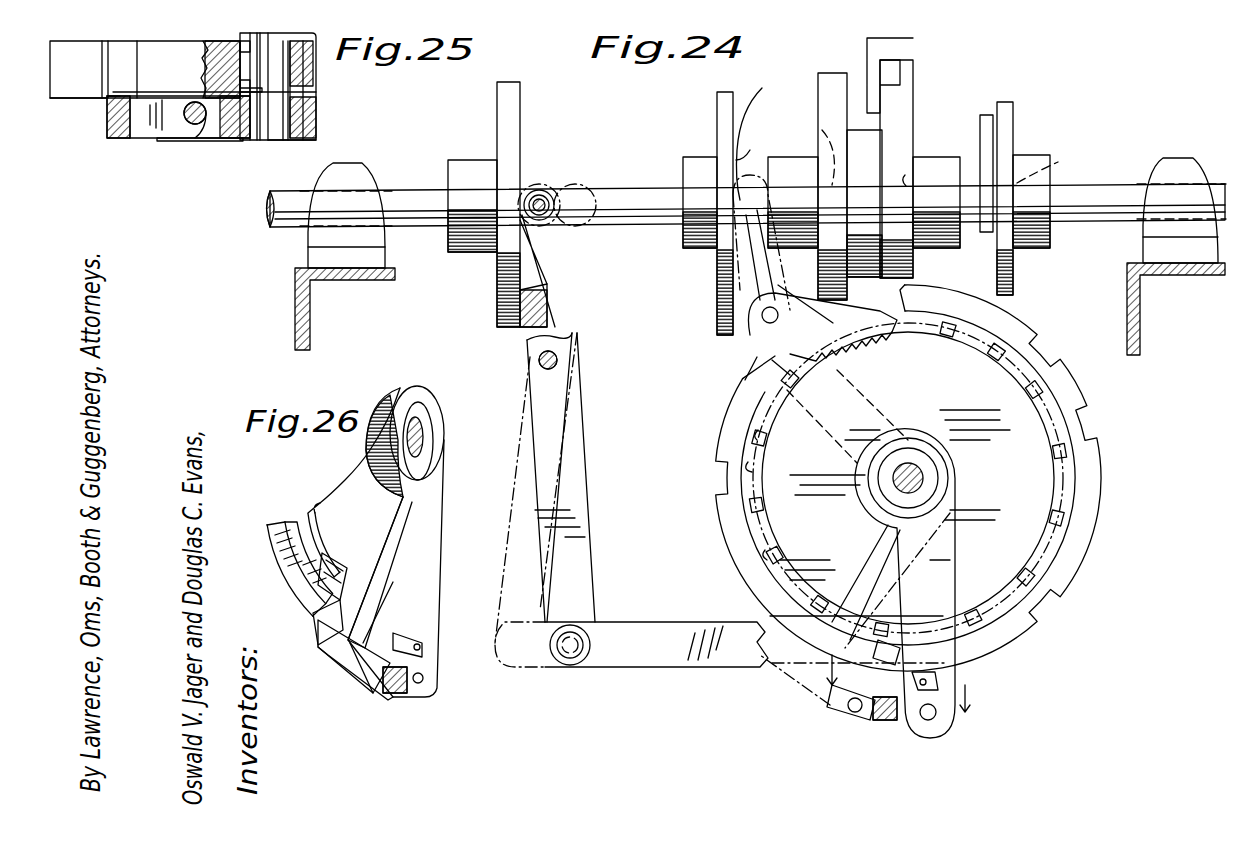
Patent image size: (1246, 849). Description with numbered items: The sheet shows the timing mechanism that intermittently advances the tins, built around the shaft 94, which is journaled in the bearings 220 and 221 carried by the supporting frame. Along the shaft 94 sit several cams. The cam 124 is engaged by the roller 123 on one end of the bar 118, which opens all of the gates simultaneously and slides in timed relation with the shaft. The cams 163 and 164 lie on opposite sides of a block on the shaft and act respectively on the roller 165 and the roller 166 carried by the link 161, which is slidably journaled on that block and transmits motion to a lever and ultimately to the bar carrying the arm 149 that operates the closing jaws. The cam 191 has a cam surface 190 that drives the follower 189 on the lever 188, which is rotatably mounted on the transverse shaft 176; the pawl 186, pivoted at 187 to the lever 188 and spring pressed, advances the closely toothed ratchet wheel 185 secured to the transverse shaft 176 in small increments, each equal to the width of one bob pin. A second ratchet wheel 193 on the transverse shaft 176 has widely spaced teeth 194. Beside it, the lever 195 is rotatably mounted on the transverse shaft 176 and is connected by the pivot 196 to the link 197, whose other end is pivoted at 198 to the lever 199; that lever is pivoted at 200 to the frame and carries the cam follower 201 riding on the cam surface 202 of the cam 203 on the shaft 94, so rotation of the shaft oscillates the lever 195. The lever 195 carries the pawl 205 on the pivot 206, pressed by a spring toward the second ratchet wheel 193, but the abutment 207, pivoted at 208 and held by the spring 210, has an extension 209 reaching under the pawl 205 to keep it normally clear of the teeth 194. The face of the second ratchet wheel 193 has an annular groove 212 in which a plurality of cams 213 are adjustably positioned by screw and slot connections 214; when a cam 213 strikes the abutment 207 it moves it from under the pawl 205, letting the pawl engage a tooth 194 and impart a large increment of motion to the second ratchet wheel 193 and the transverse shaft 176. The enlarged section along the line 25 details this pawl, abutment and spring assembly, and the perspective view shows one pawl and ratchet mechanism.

In FIG. 24, the section line 25— 25 is at (913, 673).
In FIG. 24, the shaft 94 is at (410, 223).
In FIG. 24, the bar 118 is at (982, 115).
In FIG. 24, the roller 123 is at (1056, 168).
In FIG. 24, the cam 124 is at (1010, 135).
In FIG. 24, the arm 149 is at (905, 52).
In FIG. 24, the link 161 is at (866, 150).
In FIG. 24, the cam 163 is at (828, 122).
In FIG. 24, the cam 164 is at (900, 118).
In FIG. 24, the roller 165 is at (826, 150).
In FIG. 24, the roller 166 is at (906, 178).
In FIG. 24, the transverse shaft 176 is at (925, 478).
In FIG. 26, the transverse shaft 176 is at (424, 438).
In FIG. 24, the ratchet wheel 185 is at (862, 343).
In FIG. 24, the pawl 186 is at (805, 305).
In FIG. 24, the pivot 187 is at (762, 318).
In FIG. 24, the lever 188 is at (776, 272).
In FIG. 24, the follower 189 is at (761, 242).
In FIG. 24, the cam surface 190 is at (760, 110).
In FIG. 24, the cam 191 is at (716, 128).
In FIG. 24, the second ratchet wheel 193 is at (1072, 412).
In FIG. 26, the second ratchet wheel 193 is at (278, 535).
In FIG. 24, the ratchet teeth 194 is at (1020, 342).
In FIG. 26, the ratchet teeth 194 is at (300, 576).
In FIG. 25, the lever 195 is at (312, 115).
In FIG. 24, the lever 195 is at (857, 568).
In FIG. 26, the lever 195 is at (428, 508).
In FIG. 24, the pivot 196 is at (912, 618).
In FIG. 24, the link 197 is at (685, 622).
In FIG. 24, the pivot 198 is at (570, 665).
In FIG. 24, the lever 199 is at (580, 478).
In FIG. 24, the pivot 200 is at (560, 360).
In FIG. 24, the cam follower 201 is at (543, 185).
In FIG. 24, the cam surface 202 is at (548, 307).
In FIG. 24, the cam 203 is at (508, 128).
In FIG. 25, the pawl 205 is at (70, 92).
In FIG. 24, the pawl 205 is at (900, 728).
In FIG. 26, the pawl 205 is at (358, 672).
In FIG. 25, the pivot 206 is at (270, 138).
In FIG. 24, the pivot 206 is at (937, 717).
In FIG. 26, the pivot 206 is at (423, 681).
In FIG. 25, the abutment 207 is at (142, 128).
In FIG. 24, the abutment 207 is at (825, 707).
In FIG. 26, the abutment 207 is at (376, 612).
In FIG. 25, the pivot 208 is at (190, 125).
In FIG. 26, the pivot 208 is at (392, 685).
In FIG. 25, the plate 209 is at (115, 95).
In FIG. 26, the plate 209 is at (320, 618).
In FIG. 25, the spring 210 is at (218, 140).
In FIG. 24, the spring 210 is at (940, 680).
In FIG. 26, the spring 210 is at (410, 635).
In FIG. 24, the annular groove 212 is at (752, 468).
In FIG. 26, the annular groove 212 is at (312, 513).
In FIG. 24, the cams 213 is at (782, 398).
In FIG. 26, the cams 213 is at (312, 595).
In FIG. 24, the screw and slot connections 214 is at (760, 436).
In FIG. 26, the screw and slot connections 214 is at (325, 552).
In FIG. 24, the bearing 220 is at (358, 178).
In FIG. 24, the bearing 221 is at (1192, 144).